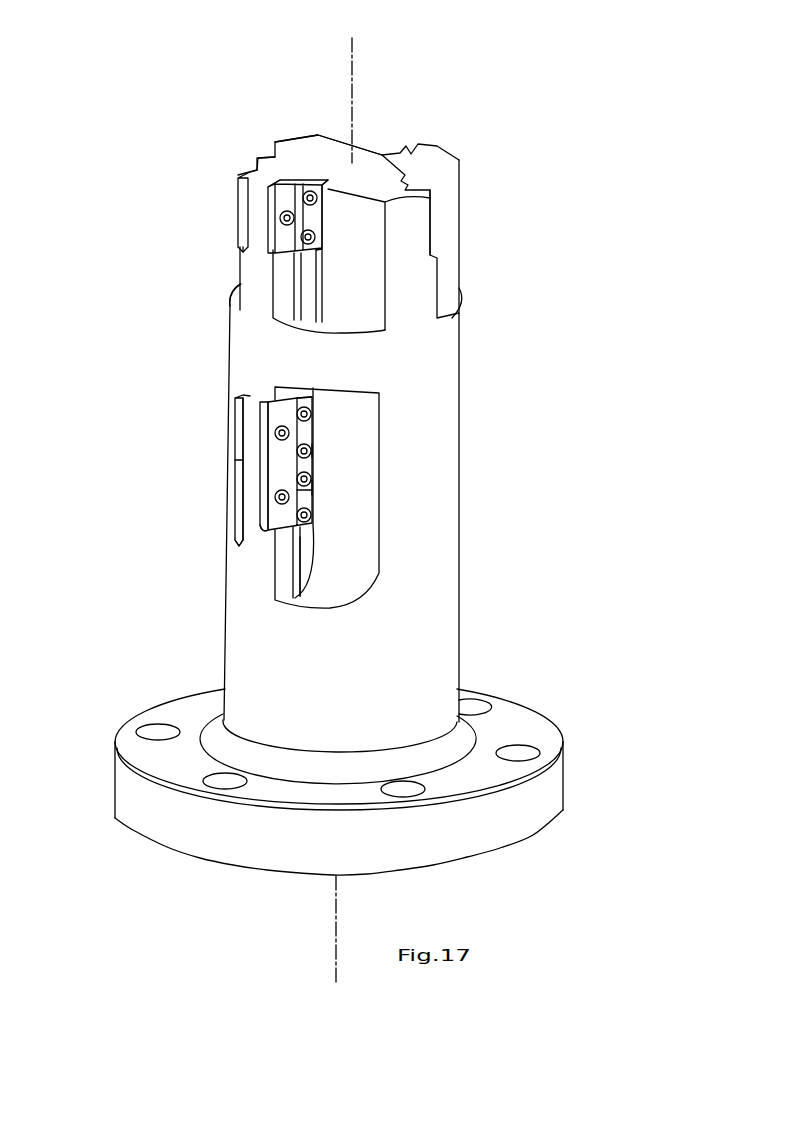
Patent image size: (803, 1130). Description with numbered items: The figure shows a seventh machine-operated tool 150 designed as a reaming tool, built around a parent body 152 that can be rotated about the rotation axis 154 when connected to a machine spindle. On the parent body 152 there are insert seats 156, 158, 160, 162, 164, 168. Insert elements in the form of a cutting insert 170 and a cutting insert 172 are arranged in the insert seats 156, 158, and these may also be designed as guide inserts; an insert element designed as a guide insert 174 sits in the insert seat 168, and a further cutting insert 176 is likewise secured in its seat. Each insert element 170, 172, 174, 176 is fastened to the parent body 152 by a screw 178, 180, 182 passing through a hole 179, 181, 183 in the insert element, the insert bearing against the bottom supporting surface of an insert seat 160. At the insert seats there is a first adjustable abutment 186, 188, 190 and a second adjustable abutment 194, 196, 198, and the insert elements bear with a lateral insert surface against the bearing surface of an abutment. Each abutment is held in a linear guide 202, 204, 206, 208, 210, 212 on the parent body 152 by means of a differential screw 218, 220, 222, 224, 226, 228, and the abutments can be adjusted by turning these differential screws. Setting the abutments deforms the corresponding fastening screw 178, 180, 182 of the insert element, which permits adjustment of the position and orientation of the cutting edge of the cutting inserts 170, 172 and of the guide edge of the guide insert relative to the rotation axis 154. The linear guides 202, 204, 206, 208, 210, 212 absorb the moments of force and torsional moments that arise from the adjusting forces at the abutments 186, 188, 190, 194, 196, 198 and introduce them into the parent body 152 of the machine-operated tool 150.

The machine-operated tool 150 is at (598, 162).
The parent body 152 is at (435, 535).
The rotation axis 154 is at (354, 87).
The insert seat 156 is at (243, 540).
The insert seat 158 is at (222, 352).
The insert seat 160 is at (257, 163).
The insert seat 162 is at (437, 202).
The insert seat 164 is at (255, 238).
The insert seat 168 is at (270, 152).
The cutting insert 170 is at (312, 468).
The cutting insert 172 is at (320, 398).
The guide insert 174 is at (238, 175).
The cutting insert 176 is at (292, 182).
The screw 178 is at (262, 538).
The hole 179 is at (278, 488).
The screw 180 is at (245, 408).
The hole 181 is at (264, 441).
The screw 182 is at (283, 212).
The hole 183 is at (320, 192).
The first adjustable abutment 186 is at (313, 552).
The first adjustable abutment 188 is at (277, 438).
The first adjustable abutment 190 is at (303, 263).
The second adjustable abutment 194 is at (320, 495).
The second adjustable abutment 196 is at (312, 445).
The second adjustable abutment 198 is at (309, 186).
The linear guide 202 is at (315, 524).
The linear guide 204 is at (318, 480).
The linear guide 206 is at (315, 450).
The linear guide 208 is at (311, 393).
The linear guide 210 is at (320, 266).
The linear guide 212 is at (328, 195).
The differential screw 218 is at (298, 607).
The differential screw 220 is at (310, 488).
The differential screw 222 is at (280, 458).
The differential screw 224 is at (280, 403).
The differential screw 226 is at (305, 240).
The differential screw 228 is at (276, 208).